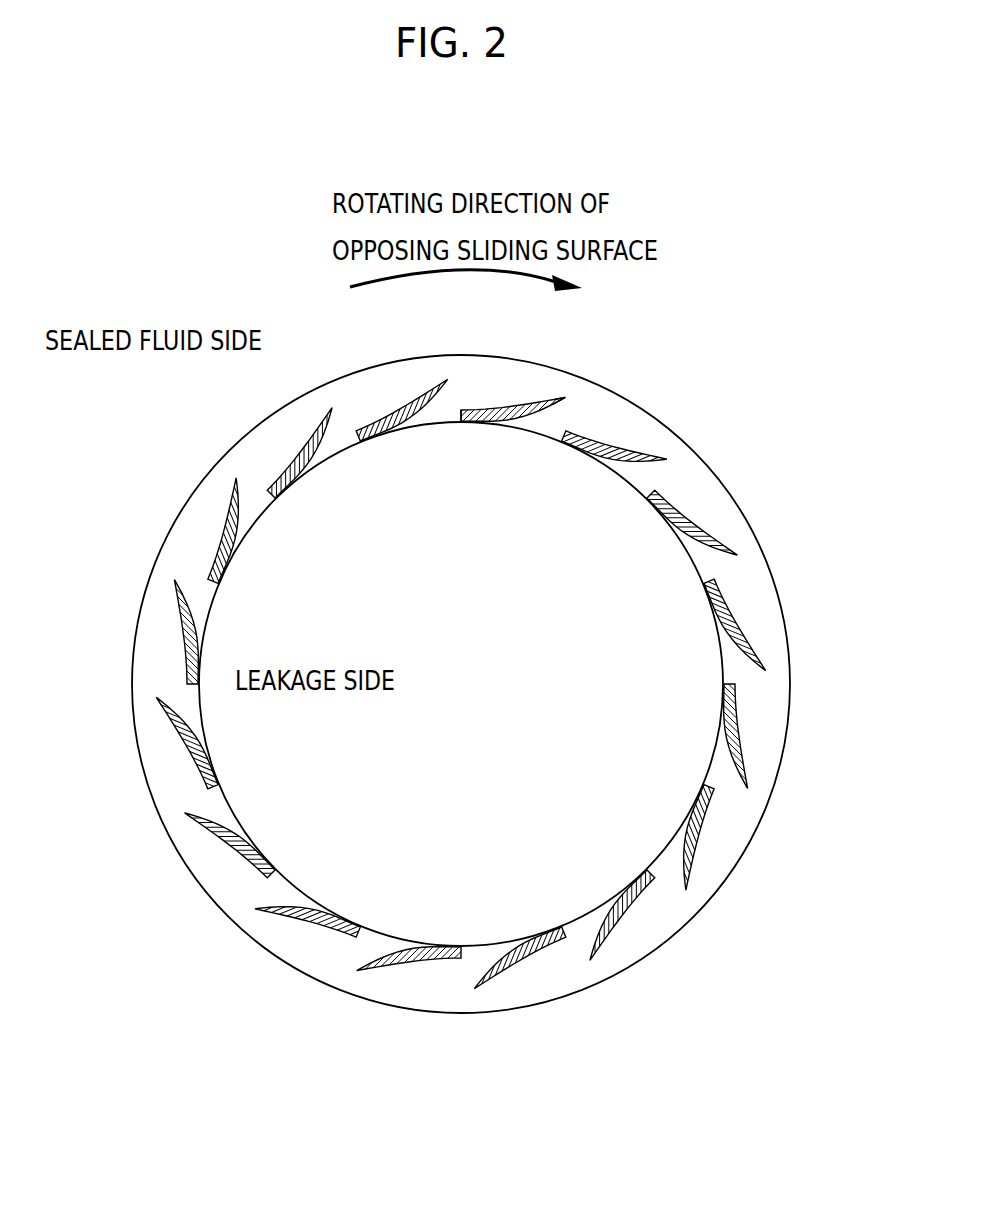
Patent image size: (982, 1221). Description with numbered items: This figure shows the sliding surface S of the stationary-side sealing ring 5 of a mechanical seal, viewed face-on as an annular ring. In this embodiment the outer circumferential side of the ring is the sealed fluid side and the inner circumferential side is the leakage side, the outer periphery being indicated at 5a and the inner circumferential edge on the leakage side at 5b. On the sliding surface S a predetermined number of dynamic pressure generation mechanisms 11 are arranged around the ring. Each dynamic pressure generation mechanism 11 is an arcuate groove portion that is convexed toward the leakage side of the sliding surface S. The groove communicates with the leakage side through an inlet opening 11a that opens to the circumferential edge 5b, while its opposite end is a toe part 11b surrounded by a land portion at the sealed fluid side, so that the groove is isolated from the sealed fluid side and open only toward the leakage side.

The stationary-side sealing ring 5 is at (177, 492).
The outer peripheral surface of seal ring 5a is at (743, 500).
The circumferential edge on the leakage side 5b is at (690, 557).
The sliding surface S is at (158, 556).
The dynamic pressure generation mechanism 11 is at (509, 407).
The inlet opening 11a is at (468, 422).
The toe part 11b is at (562, 396).